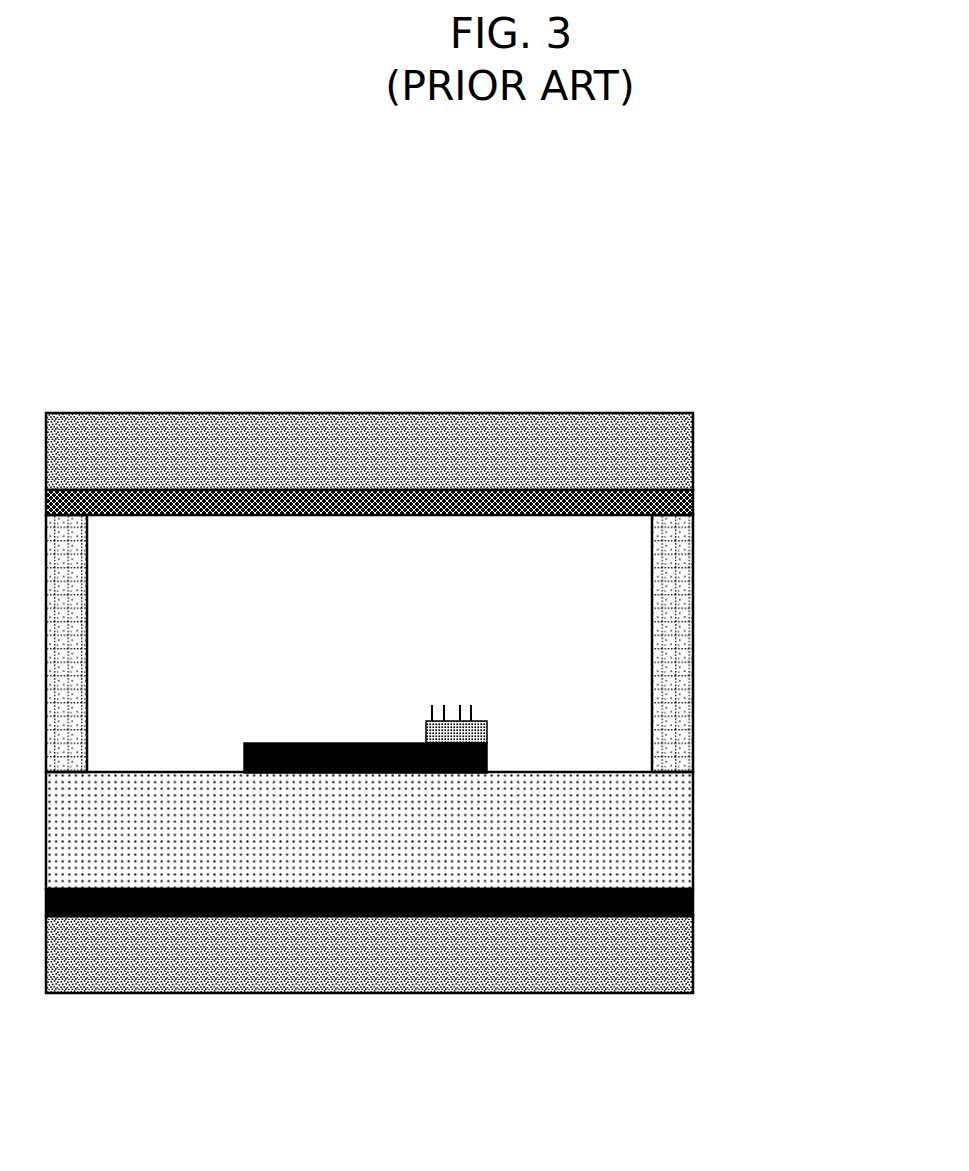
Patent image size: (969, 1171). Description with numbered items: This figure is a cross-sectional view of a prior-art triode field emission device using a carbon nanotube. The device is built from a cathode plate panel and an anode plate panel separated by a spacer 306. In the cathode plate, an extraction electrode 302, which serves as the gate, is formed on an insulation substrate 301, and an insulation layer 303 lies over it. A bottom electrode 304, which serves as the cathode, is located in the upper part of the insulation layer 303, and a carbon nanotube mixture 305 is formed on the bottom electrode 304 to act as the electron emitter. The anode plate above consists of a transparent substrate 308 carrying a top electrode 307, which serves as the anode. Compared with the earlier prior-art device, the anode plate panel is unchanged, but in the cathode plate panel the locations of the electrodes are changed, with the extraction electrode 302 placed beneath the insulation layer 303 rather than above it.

The insulation substrate 301 is at (693, 955).
The extraction electrode 302 is at (693, 903).
The insulation layer 303 is at (693, 834).
The bottom electrode 304 is at (275, 743).
The carbon nanotube mixture 305 is at (485, 722).
The spacer 306 is at (693, 598).
The top electrode 307 is at (693, 493).
The transparent substrate 308 is at (693, 432).